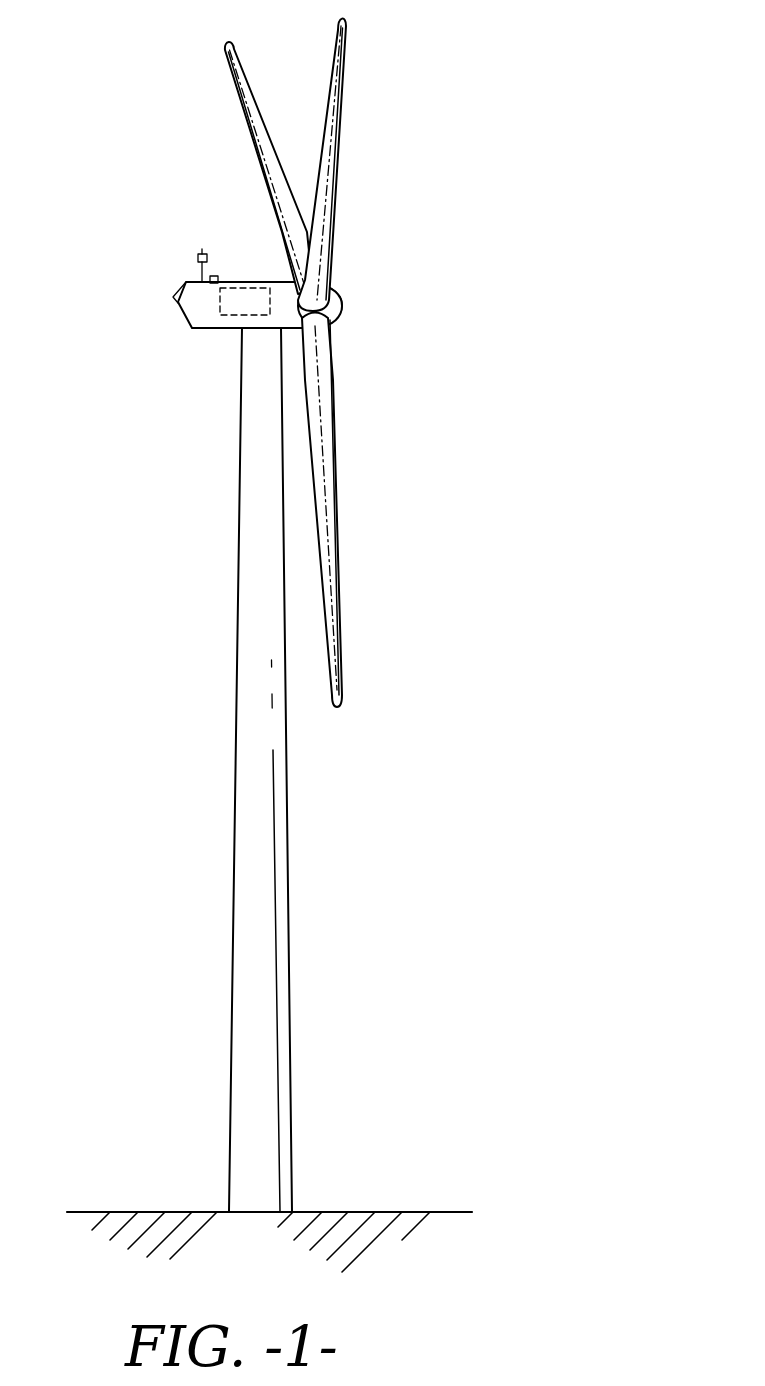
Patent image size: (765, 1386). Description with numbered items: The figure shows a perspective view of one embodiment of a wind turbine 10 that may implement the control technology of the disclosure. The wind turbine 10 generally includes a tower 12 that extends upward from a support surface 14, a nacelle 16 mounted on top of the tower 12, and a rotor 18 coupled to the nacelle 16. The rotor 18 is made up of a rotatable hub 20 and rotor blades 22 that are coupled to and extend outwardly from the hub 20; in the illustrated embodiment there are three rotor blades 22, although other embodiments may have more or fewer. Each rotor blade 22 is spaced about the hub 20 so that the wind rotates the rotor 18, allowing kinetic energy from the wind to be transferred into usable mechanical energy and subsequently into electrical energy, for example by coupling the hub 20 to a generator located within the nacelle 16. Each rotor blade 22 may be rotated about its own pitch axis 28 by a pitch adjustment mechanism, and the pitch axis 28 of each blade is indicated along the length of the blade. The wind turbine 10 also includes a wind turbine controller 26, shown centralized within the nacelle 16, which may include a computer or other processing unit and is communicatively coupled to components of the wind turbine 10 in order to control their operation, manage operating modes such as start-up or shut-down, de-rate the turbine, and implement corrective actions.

The wind turbine 10 is at (314, 636).
The tower 12 is at (245, 892).
The support surface 14 is at (152, 1211).
The nacelle 16 is at (213, 328).
The rotor 18 is at (350, 272).
The rotatable hub 20 is at (343, 306).
The rotor blade 22 is at (334, 67).
The wind turbine controller 26 is at (248, 282).
The pitch axis 28 is at (268, 200).